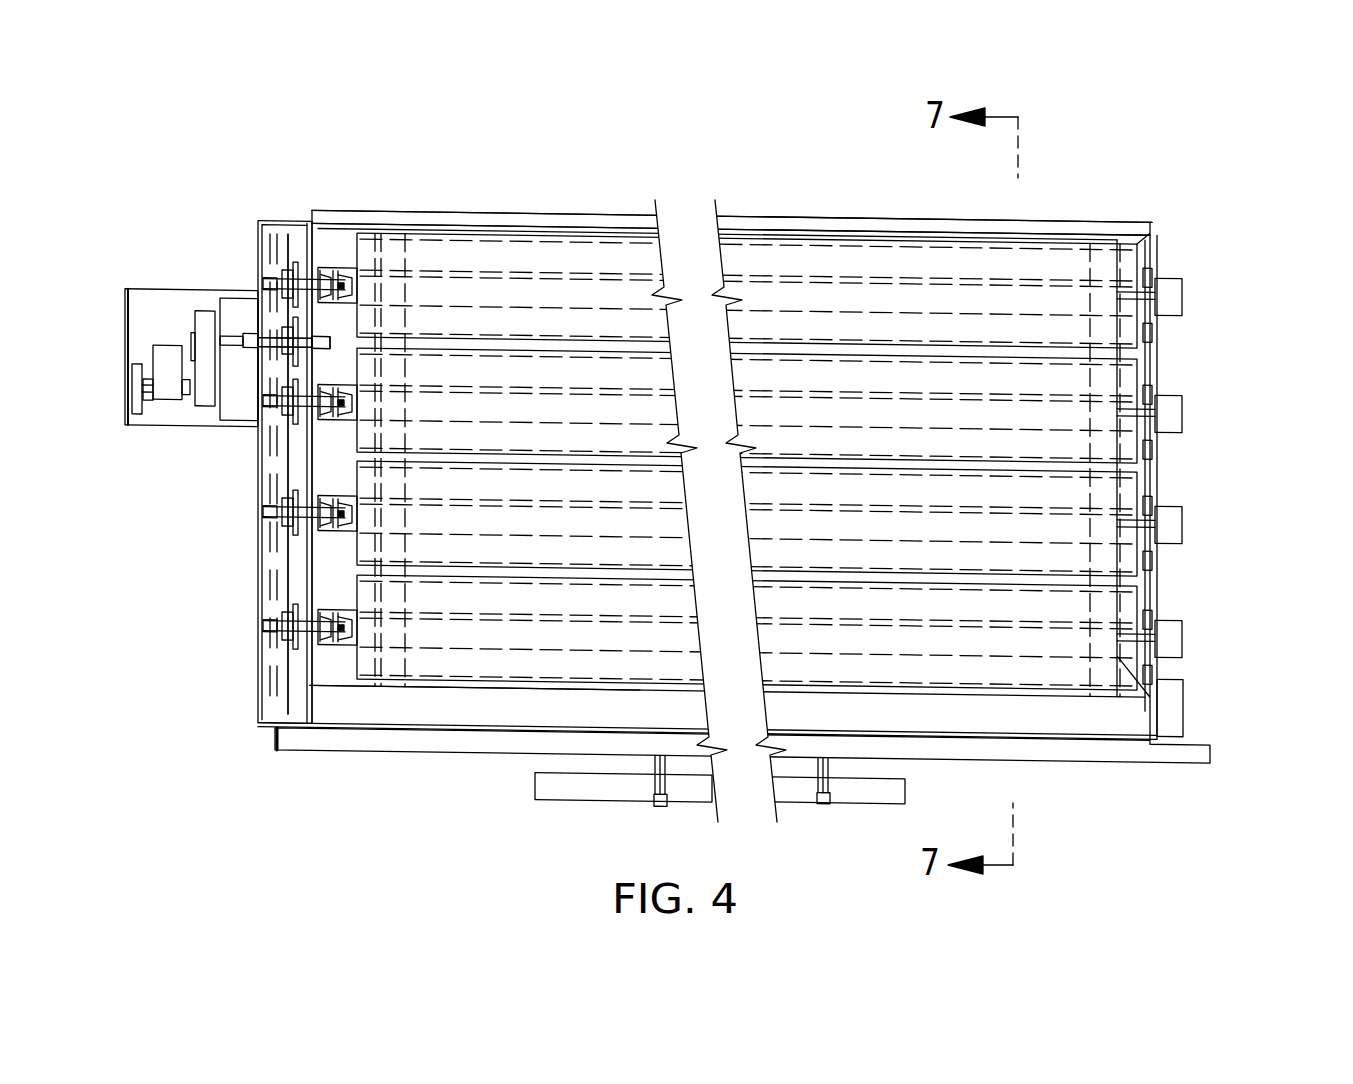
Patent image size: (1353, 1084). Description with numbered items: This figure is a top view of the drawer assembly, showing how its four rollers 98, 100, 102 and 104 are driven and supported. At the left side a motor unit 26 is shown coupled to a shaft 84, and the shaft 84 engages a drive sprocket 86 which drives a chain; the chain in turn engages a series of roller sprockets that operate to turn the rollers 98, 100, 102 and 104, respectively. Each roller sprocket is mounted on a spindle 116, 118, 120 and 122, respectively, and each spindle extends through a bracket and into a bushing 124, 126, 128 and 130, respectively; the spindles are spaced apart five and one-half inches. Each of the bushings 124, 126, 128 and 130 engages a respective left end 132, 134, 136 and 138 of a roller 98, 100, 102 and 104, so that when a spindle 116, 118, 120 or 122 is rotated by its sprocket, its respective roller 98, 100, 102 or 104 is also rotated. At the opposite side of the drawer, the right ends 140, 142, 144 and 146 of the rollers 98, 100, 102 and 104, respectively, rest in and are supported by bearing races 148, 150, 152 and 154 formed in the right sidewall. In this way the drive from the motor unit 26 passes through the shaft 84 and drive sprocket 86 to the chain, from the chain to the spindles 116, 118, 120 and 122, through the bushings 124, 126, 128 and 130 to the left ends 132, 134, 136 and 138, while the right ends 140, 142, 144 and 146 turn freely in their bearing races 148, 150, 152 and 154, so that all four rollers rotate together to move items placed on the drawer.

The motor 26 is at (163, 357).
The shaft 84 is at (322, 338).
The drive sprocket 86 is at (290, 320).
The roller 98 is at (795, 242).
The roller 100 is at (913, 357).
The roller 102 is at (995, 578).
The roller 104 is at (965, 692).
The spindle 116 is at (295, 325).
The spindle 118 is at (275, 398).
The spindle 120 is at (263, 514).
The spindle 122 is at (263, 630).
The bushing 124 is at (345, 268).
The bushing 126 is at (322, 418).
The bushing 128 is at (322, 530).
The bushing 130 is at (323, 643).
The left end 132 is at (366, 272).
The left end 134 is at (343, 420).
The left end 136 is at (338, 536).
The left end 138 is at (336, 690).
The right end 140 is at (1172, 279).
The right end 142 is at (1172, 396).
The right end 144 is at (1172, 507).
The right end 146 is at (1172, 621).
The bearing race 148 is at (1150, 332).
The bearing race 150 is at (1150, 449).
The bearing race 152 is at (1150, 560).
The bearing race 154 is at (1150, 674).